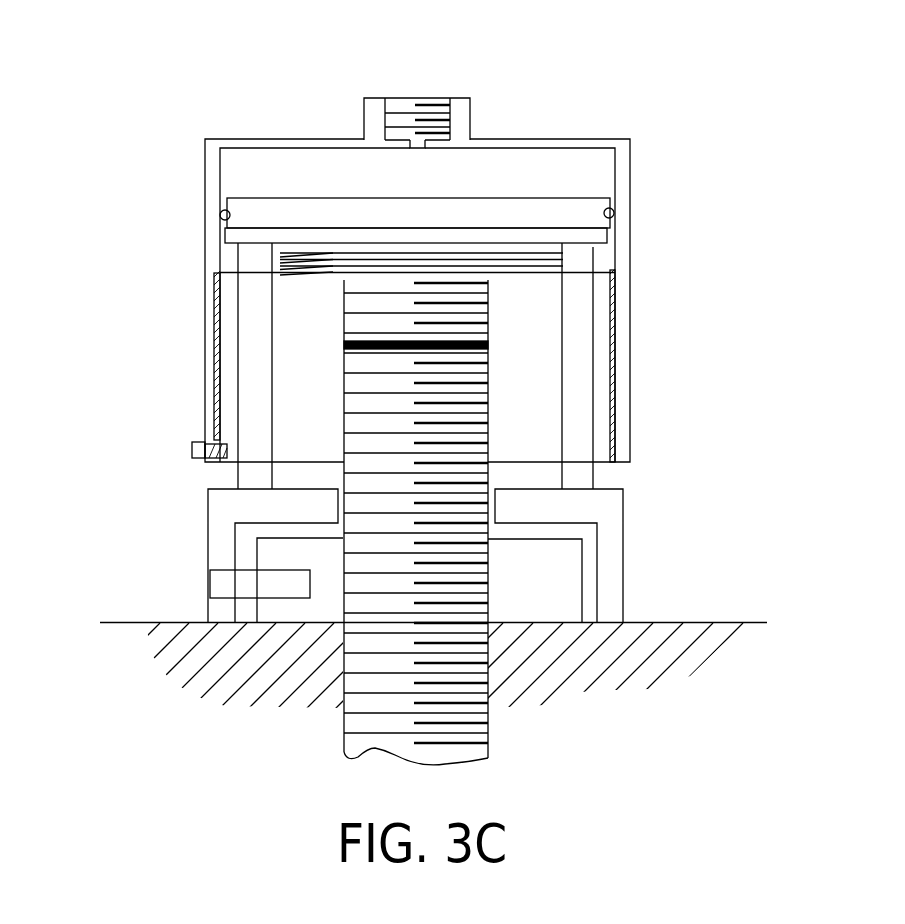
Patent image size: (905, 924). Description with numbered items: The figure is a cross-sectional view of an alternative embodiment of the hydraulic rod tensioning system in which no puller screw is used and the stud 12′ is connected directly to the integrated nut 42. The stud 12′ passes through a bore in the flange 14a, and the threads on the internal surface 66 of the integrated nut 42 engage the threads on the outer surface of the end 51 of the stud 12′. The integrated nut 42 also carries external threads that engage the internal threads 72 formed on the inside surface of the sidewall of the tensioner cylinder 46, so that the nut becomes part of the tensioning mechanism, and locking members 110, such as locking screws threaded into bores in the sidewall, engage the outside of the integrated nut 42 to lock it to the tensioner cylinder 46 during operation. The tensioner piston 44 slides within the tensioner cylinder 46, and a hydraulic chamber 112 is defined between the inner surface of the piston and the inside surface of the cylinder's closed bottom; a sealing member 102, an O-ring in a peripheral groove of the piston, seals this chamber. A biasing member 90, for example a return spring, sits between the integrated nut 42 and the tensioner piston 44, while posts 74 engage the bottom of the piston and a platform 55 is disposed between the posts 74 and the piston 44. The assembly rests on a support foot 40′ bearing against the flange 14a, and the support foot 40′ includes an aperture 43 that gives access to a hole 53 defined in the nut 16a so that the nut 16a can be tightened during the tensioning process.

The hydraulic chamber 112 is at (491, 158).
The tensioner cylinder 46 is at (491, 142).
The tensioner piston 44 is at (428, 212).
The sealing member 102 is at (222, 213).
The platform 55 is at (485, 238).
The biasing member 90 is at (490, 258).
The posts 74 is at (253, 417).
The internal surface 66 is at (357, 321).
The internal threads 72 is at (218, 300).
The integrated nut 42 is at (547, 373).
The end of stud 51 is at (488, 341).
The locking members 110 is at (192, 447).
The support foot 40′ is at (583, 508).
The stud 12′ is at (488, 557).
The nut 16a is at (565, 580).
The hole 53 is at (265, 580).
The aperture 43 is at (218, 583).
The flange 14a is at (650, 636).